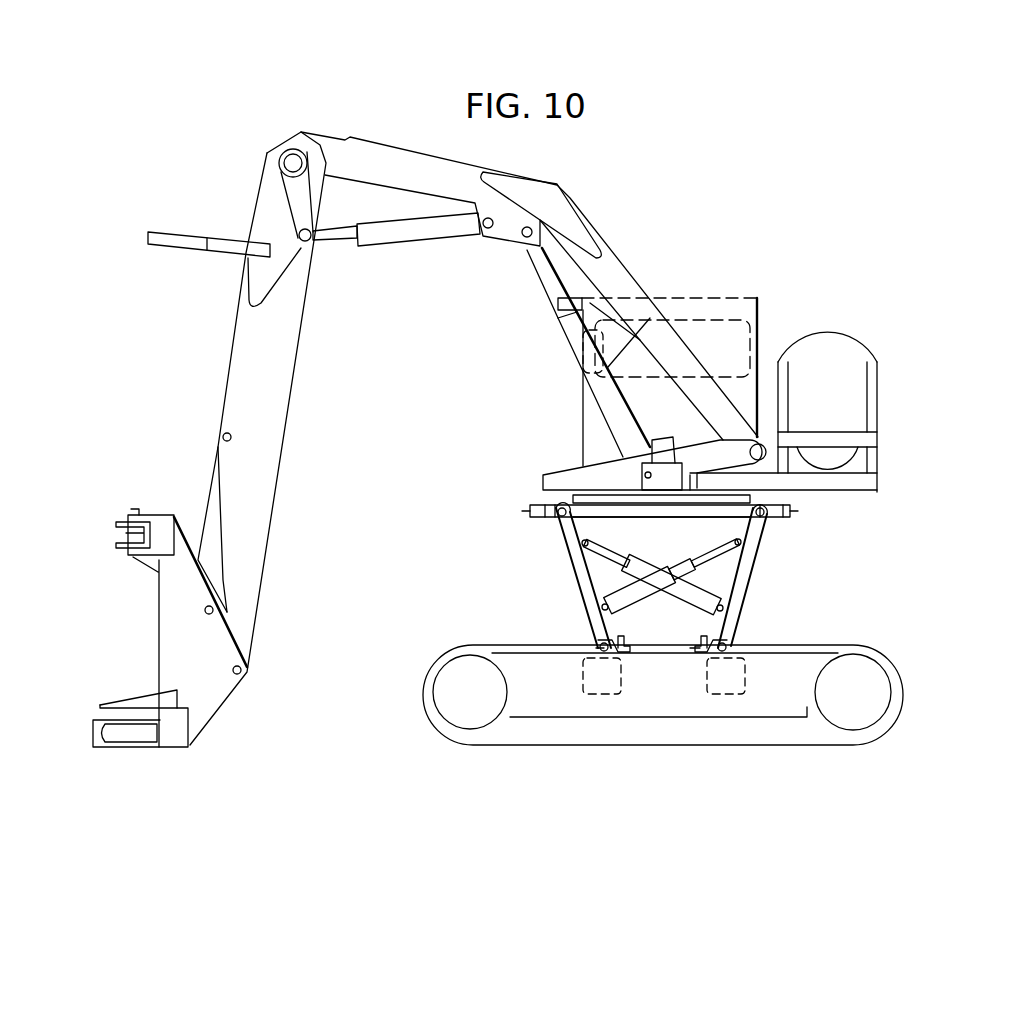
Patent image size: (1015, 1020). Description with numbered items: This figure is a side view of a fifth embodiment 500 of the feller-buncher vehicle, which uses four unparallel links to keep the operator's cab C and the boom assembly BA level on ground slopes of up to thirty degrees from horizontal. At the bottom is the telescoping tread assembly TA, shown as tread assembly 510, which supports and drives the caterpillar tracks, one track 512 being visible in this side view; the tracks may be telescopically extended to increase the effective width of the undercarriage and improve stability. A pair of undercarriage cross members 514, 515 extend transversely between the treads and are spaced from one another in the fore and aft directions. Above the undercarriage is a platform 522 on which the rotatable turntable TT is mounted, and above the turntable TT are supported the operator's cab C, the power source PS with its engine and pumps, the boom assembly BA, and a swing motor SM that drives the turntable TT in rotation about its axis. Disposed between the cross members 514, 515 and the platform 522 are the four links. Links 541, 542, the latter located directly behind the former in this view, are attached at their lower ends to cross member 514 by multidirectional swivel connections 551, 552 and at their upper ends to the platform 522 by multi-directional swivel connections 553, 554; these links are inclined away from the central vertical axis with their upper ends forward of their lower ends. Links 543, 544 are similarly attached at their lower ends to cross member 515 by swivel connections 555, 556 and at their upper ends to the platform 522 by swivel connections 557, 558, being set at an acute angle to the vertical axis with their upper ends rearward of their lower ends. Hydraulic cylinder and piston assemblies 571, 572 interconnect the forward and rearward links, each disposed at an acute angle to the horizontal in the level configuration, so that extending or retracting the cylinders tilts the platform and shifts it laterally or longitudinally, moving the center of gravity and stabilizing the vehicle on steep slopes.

The boom assembly BA is at (299, 114).
The fifth embodiment of the vehicle 500 is at (668, 150).
The operator's cab C is at (730, 300).
The power source PS is at (858, 357).
The swing motor SM is at (665, 447).
The turntable TT is at (545, 478).
The platform 522 is at (702, 512).
The multi-directional swivel connection 553 is at (516, 527).
The multi-directional swivel connection 554 is at (562, 516).
The link 541 is at (538, 578).
The link 542 is at (578, 572).
The multi-directional swivel connection 551 is at (561, 627).
The multi-directional swivel connection 552 is at (603, 645).
The multi-directional swivel connection 557 is at (809, 526).
The multi-directional swivel connection 558 is at (762, 516).
The link 543 is at (777, 578).
The link 544 is at (738, 588).
The multi-directional swivel connection 555 is at (759, 637).
The multi-directional swivel connection 556 is at (730, 650).
The hydraulic cylinder and piston assembly 571 is at (668, 578).
The hydraulic cylinder and piston assembly 572 is at (626, 596).
The undercarriage cross member 514 is at (626, 688).
The undercarriage cross member 515 is at (745, 683).
The tread assembly 510 is at (946, 632).
The telescoping tread assembly TA is at (576, 757).
The track 512 is at (775, 735).